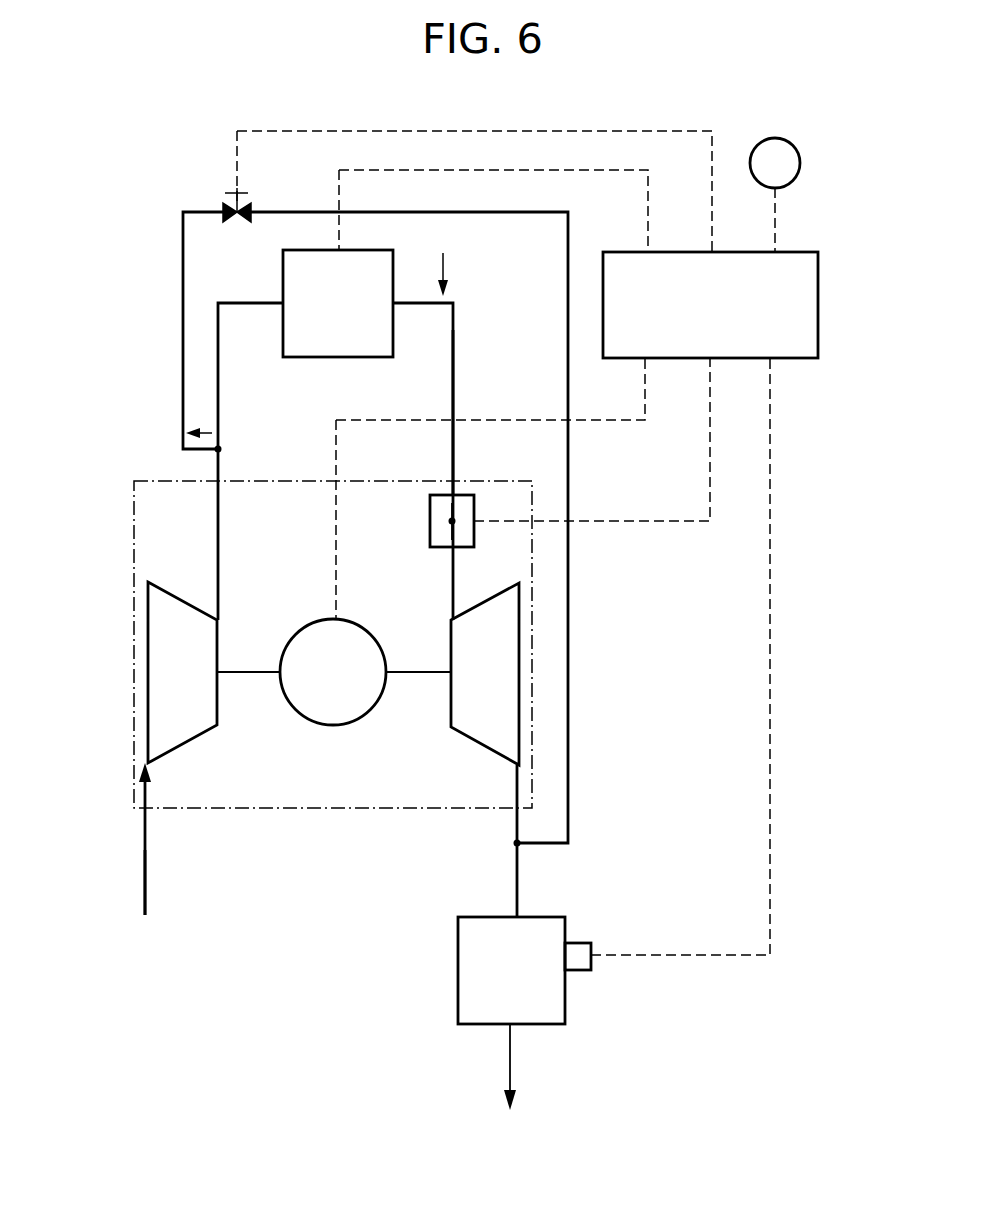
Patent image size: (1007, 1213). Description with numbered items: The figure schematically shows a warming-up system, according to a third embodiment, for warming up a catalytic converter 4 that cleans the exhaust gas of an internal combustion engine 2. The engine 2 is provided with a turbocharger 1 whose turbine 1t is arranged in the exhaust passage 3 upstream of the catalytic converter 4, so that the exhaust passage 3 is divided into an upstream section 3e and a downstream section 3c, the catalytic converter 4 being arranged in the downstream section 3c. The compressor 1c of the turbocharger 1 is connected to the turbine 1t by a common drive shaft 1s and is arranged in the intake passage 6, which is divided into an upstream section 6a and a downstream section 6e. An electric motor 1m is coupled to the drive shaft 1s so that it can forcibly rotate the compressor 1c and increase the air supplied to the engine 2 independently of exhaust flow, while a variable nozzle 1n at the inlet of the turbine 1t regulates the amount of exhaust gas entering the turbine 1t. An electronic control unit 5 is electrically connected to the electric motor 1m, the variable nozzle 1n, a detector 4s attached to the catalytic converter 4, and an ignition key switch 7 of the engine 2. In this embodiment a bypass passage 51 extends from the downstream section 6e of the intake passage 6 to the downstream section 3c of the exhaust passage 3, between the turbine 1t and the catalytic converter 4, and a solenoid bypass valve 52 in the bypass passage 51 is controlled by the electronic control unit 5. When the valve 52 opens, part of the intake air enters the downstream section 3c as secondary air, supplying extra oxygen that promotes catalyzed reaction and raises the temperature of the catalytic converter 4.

The turbocharger 1 is at (133, 500).
The compressor 1c is at (178, 593).
The turbine 1t is at (500, 596).
The electric motor 1m is at (333, 726).
The drive shaft 1s is at (248, 674).
The variable nozzle 1n is at (430, 541).
The internal combustion engine 2 is at (283, 264).
The exhaust passage 3 is at (455, 351).
The upstream section of the exhaust passage 3e is at (454, 388).
The downstream section of the exhaust passage 3c is at (516, 866).
The catalytic converter 4 is at (458, 934).
The detector 4s is at (584, 960).
The electronic control unit 5 is at (818, 269).
The bypass passage 51 is at (183, 330).
The bypass valve 52 is at (232, 196).
The intake passage 6 is at (143, 834).
The downstream section of the intake passage 6e is at (219, 385).
The upstream section of the intake passage 6a is at (147, 862).
The ignition key switch 7 is at (786, 158).